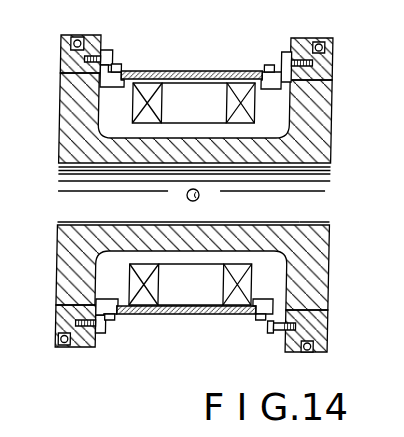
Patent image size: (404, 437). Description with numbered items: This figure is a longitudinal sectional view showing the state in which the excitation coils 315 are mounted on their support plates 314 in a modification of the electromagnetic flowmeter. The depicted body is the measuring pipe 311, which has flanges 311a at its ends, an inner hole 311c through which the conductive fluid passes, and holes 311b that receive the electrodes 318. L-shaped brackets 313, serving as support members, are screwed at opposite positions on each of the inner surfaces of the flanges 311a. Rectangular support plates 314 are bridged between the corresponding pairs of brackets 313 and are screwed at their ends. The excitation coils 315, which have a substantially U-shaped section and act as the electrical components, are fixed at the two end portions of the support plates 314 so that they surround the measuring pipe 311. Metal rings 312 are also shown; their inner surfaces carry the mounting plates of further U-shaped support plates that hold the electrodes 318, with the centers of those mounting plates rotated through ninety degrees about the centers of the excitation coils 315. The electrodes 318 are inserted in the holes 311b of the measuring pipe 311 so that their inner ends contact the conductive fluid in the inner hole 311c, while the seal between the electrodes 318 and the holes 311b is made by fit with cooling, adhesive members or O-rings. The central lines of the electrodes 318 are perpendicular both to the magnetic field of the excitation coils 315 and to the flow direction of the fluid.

The measuring pipe 311 is at (52, 260).
The flanges 311a is at (331, 82).
The holes 311b is at (200, 199).
The inner hole 311c is at (317, 224).
The metal rings 312 is at (114, 50).
The L-shaped brackets 313 is at (110, 52).
The support plates 314 is at (194, 71).
The excitation coils 315 is at (130, 110).
The electrodes 318 is at (187, 198).